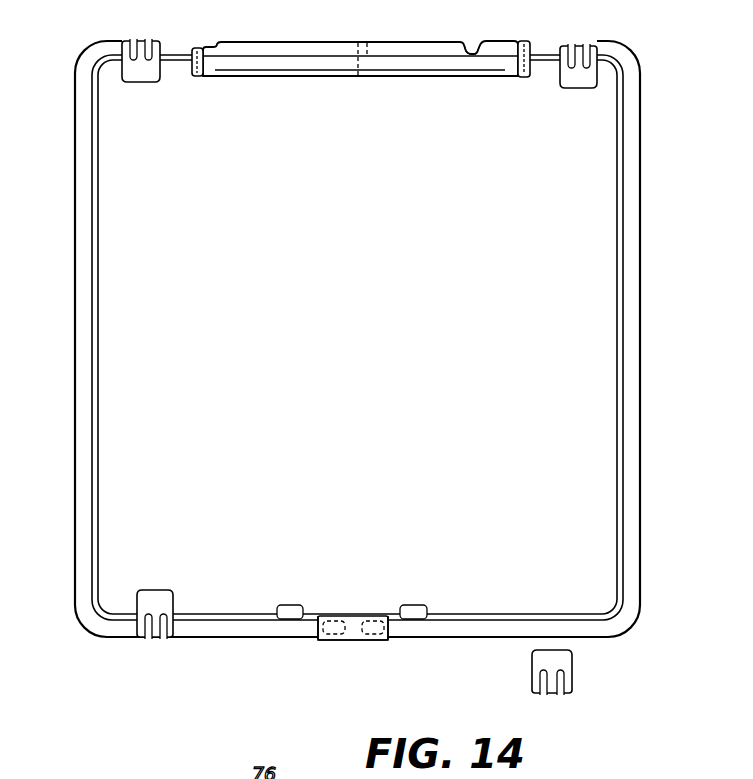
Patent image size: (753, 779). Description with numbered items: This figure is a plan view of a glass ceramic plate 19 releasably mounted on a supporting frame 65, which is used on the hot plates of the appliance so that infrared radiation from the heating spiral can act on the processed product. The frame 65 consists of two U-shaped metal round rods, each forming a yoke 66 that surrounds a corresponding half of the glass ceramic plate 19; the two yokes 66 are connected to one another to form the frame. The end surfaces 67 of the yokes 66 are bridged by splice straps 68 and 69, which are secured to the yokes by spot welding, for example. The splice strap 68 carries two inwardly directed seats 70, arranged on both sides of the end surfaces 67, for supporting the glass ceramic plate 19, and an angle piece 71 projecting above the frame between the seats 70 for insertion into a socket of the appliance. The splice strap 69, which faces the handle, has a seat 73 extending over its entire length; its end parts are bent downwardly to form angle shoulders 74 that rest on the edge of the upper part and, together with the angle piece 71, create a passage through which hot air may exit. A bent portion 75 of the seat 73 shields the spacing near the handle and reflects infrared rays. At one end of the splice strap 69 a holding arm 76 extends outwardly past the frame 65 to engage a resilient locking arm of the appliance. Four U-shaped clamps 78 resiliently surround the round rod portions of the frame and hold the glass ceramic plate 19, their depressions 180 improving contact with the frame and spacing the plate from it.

The glass ceramic plate 19 is at (367, 333).
The frame 65 is at (73, 276).
The yoke 66 is at (81, 388).
The end surfaces 67 is at (360, 78).
The splice strap 68 is at (348, 617).
The splice strap 69 is at (259, 80).
The seat 70 is at (289, 605).
The angle piece 71 is at (320, 638).
The seat 73 is at (313, 68).
The angle shoulders 74 is at (198, 78).
The bent portion 75 is at (428, 78).
The holding arm 76 is at (496, 42).
The U-shaped clamp 78 is at (126, 79).
The clip slot 180 is at (130, 45).